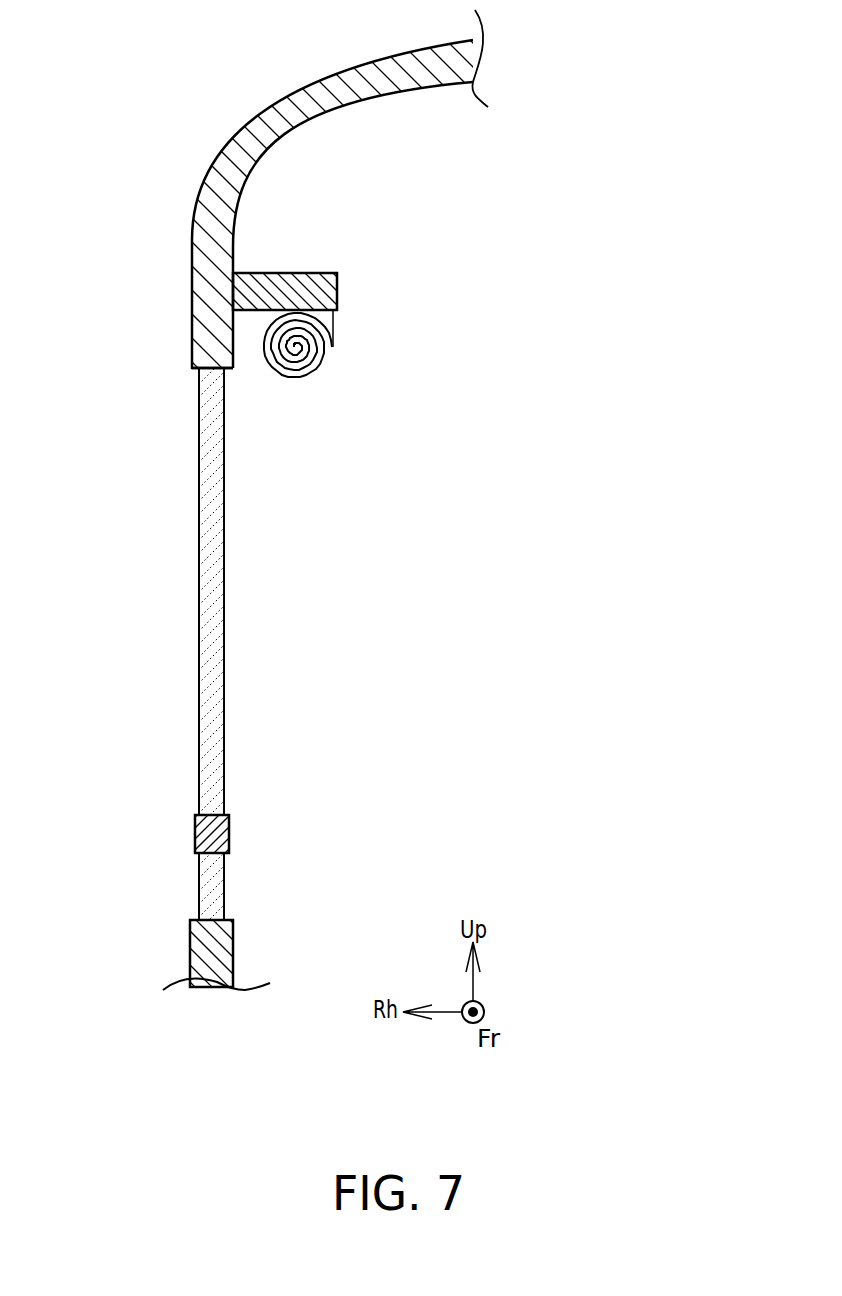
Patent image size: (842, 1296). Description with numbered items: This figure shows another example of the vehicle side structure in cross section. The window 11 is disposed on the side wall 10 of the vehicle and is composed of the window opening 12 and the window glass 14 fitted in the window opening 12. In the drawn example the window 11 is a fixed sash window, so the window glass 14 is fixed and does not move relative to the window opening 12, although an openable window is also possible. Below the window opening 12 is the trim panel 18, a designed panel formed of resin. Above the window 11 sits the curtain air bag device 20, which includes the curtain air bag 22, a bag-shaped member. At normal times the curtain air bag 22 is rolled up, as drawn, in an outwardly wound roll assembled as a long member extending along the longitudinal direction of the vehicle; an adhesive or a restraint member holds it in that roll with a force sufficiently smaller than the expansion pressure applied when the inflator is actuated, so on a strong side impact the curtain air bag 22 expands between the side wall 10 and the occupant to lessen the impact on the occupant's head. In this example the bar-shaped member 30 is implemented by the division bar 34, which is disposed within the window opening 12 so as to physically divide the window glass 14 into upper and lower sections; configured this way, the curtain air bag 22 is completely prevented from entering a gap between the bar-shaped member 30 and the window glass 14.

The side wall 10 is at (191, 309).
The window 11 is at (222, 704).
The window opening 12 is at (193, 372).
The window glass 14 is at (199, 583).
The trim panel 18 is at (232, 940).
The curtain air bag device 20 is at (383, 288).
The curtain air bag 22 is at (331, 357).
The bar-shaped member 30 is at (292, 833).
The division bar 34 is at (230, 834).